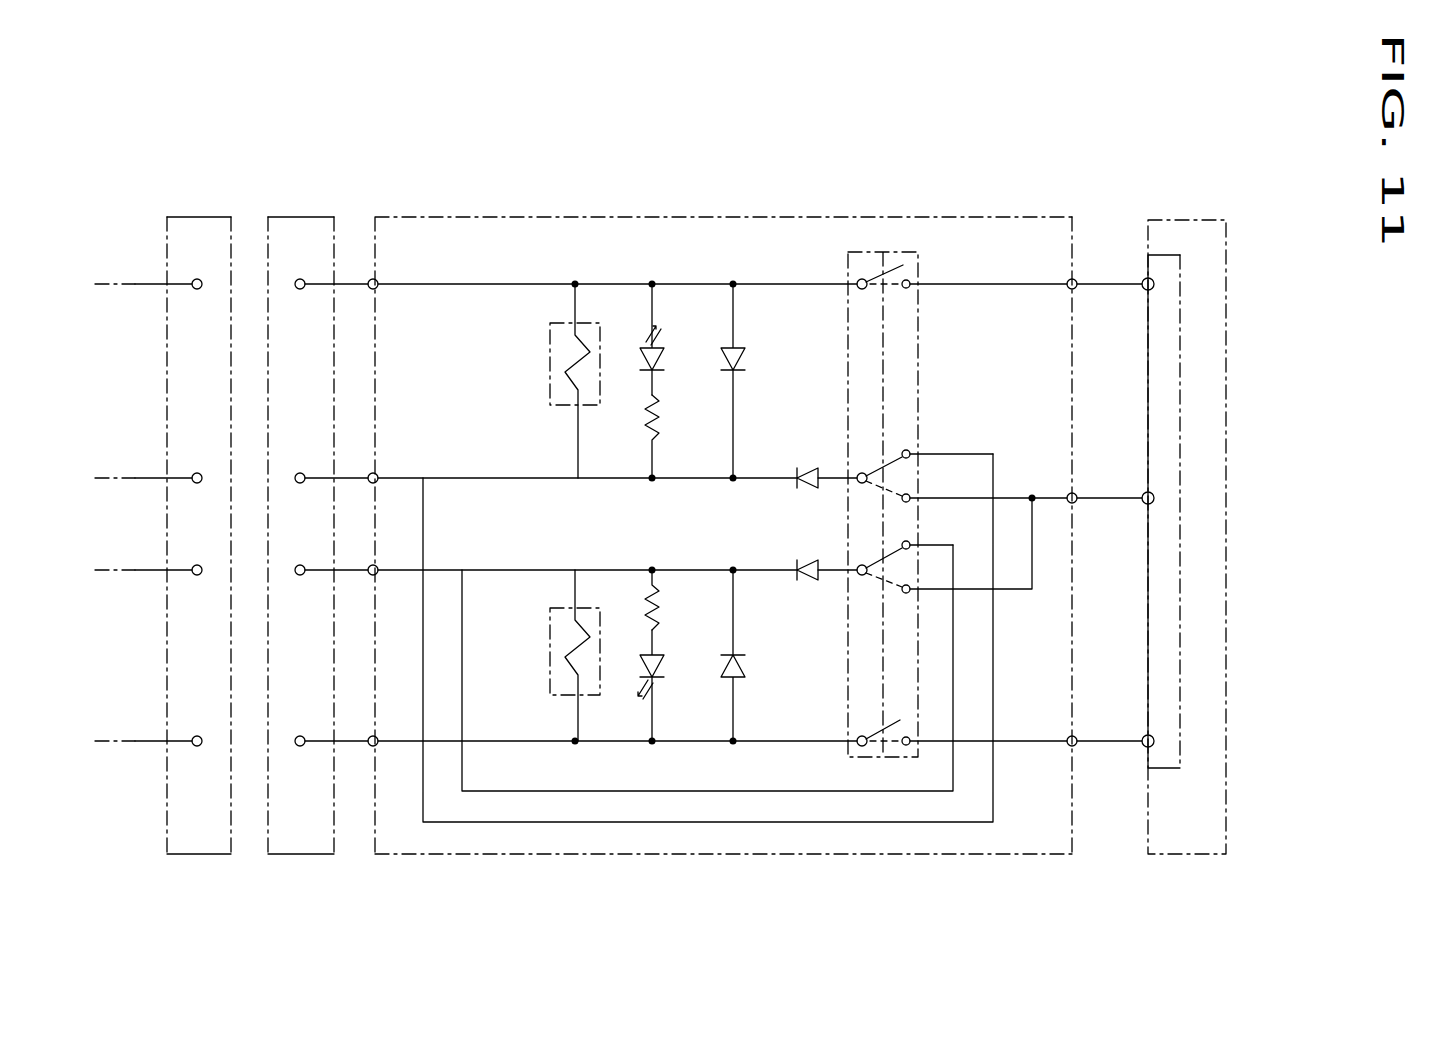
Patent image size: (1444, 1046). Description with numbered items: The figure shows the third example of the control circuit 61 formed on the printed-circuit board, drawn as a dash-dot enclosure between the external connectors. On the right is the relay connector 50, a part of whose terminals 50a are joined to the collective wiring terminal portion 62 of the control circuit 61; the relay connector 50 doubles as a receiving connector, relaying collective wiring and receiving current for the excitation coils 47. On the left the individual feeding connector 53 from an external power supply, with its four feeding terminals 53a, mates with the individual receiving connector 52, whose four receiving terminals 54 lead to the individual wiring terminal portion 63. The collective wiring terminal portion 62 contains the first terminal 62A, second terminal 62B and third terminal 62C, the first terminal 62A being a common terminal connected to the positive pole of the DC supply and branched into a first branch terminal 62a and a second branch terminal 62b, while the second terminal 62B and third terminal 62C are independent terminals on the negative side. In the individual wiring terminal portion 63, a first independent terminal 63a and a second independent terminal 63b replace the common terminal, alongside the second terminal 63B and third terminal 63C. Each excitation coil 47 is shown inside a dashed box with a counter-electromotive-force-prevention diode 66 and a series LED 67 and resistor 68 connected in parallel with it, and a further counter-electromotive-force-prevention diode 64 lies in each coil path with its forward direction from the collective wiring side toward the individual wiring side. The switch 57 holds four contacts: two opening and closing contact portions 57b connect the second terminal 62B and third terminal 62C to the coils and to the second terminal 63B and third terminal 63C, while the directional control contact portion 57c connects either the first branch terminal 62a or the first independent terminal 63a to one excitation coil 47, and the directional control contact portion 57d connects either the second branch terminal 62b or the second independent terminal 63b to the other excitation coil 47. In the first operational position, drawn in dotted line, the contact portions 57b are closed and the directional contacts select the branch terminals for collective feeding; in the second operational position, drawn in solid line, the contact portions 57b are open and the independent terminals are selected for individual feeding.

The excitation coil 47 is at (550, 372).
The relay connector 50 is at (1228, 507).
The terminal of the relay connector 50a is at (1182, 372).
The individual receiving connector 52 is at (297, 215).
The individual feeding connector 53 is at (163, 489).
The feeding terminal 53a is at (194, 292).
The receiving terminal 54 is at (300, 292).
The switch 57 is at (922, 458).
The opening and closing contact portion 57b is at (893, 262).
The directional control contact portion 57c is at (898, 453).
The directional control contact portion 57d is at (900, 545).
The control circuit 61 is at (722, 467).
The collective wiring terminal portion 62 is at (1108, 493).
The first branch terminal 62a is at (972, 495).
The second branch terminal 62b is at (1012, 592).
The first terminal 62A is at (1076, 494).
The second terminal 62B is at (1076, 290).
The third terminal 62C is at (1076, 734).
The individual wiring terminal portion 63 is at (694, 518).
The first independent terminal 63a is at (377, 473).
The second independent terminal 63b is at (377, 565).
The second terminal 63B is at (377, 289).
The third terminal 63C is at (372, 750).
The counter-electromotive-force-prevention diode 64 is at (803, 470).
The counter-electromotive-force-prevention diode 66 is at (745, 362).
The LED 67 is at (658, 362).
The resistor 68 is at (660, 420).